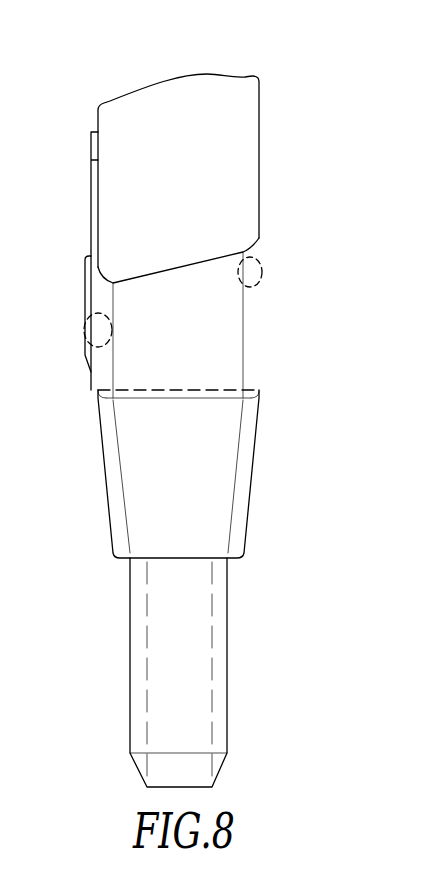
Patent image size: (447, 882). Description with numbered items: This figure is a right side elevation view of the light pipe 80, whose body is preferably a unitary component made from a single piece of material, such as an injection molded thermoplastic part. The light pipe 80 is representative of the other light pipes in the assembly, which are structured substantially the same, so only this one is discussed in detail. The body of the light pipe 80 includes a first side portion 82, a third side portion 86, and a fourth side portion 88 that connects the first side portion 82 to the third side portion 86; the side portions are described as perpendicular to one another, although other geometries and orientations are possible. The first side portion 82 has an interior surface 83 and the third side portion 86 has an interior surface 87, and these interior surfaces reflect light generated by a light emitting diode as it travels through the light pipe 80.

The light pipe 80 is at (314, 117).
The first side portion 82 is at (97, 390).
The interior surface 83 is at (85, 316).
The third side portion 86 is at (259, 373).
The interior surface 87 is at (260, 258).
The fourth side portion 88 is at (223, 336).